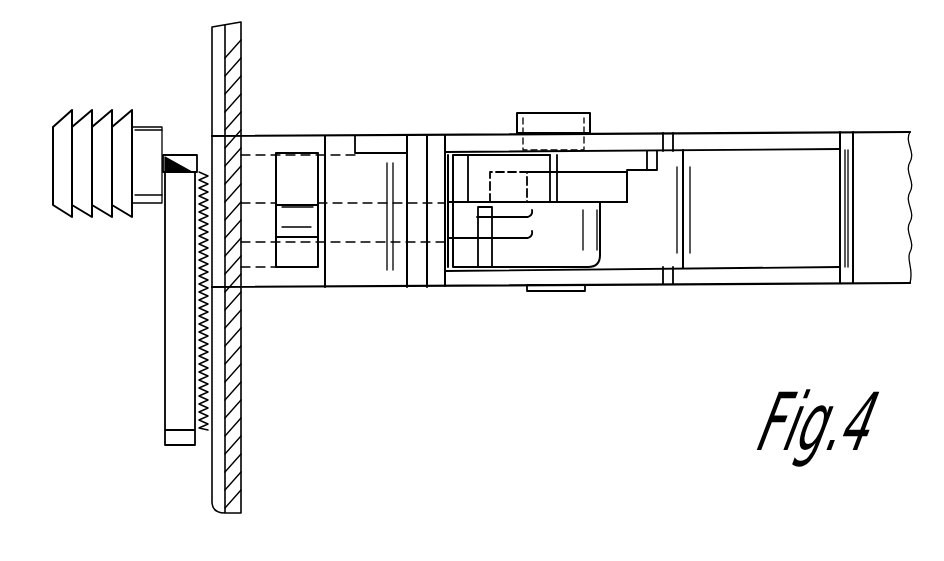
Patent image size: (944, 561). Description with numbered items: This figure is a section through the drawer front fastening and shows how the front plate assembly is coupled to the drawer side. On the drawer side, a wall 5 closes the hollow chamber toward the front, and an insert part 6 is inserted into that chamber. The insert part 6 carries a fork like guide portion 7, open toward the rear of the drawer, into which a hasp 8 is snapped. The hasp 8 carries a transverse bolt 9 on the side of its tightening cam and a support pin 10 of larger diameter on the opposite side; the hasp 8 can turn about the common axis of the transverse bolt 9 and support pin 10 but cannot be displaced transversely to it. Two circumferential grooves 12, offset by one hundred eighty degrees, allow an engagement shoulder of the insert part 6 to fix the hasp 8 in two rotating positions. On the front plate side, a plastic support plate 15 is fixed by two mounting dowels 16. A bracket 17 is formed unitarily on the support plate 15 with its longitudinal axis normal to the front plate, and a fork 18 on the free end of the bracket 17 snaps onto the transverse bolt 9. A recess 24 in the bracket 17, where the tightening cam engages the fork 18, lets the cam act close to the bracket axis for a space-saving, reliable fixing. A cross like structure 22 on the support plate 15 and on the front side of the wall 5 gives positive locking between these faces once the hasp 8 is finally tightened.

The wall 5 is at (237, 450).
The insert part 6 is at (486, 294).
The fork like guide portion 7 is at (628, 298).
The hasp 8 is at (620, 188).
The transverse bolt 9 is at (557, 291).
The support pin 10 is at (600, 125).
The grooves 12 is at (587, 190).
The support plate 15 is at (173, 377).
The mounting dowels 16 is at (102, 205).
The bracket 17 is at (300, 217).
The fork 18 is at (600, 225).
The cross like structure 22 is at (207, 428).
The recess 24 is at (472, 215).